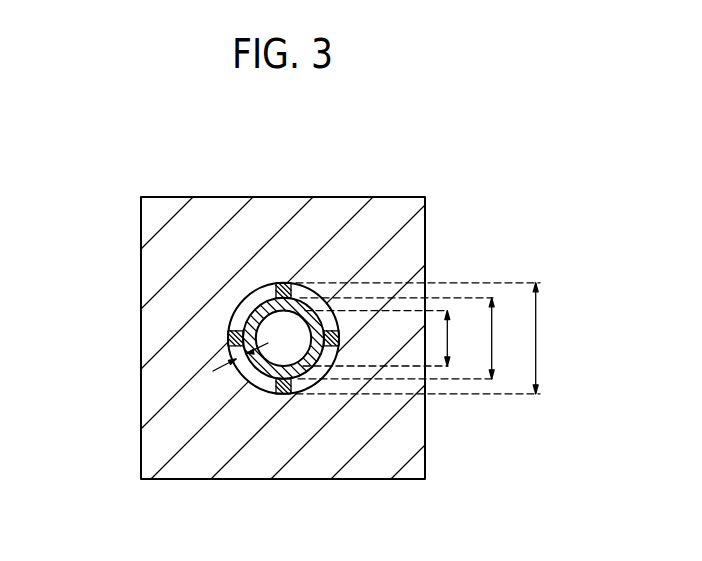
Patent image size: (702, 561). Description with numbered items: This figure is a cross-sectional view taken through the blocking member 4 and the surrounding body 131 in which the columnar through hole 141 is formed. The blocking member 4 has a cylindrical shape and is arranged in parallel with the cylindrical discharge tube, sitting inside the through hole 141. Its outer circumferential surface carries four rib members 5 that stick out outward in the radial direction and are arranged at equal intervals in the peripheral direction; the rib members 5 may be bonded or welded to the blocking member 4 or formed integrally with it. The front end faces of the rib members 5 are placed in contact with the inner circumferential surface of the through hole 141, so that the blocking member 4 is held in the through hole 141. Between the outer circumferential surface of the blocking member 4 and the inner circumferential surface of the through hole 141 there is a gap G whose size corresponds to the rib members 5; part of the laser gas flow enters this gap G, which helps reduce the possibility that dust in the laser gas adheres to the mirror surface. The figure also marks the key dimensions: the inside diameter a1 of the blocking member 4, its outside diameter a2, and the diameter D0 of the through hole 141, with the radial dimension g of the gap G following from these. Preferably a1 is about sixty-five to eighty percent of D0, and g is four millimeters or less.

The block body 131 is at (368, 470).
The through hole 141 is at (257, 292).
The blocking member 4 is at (277, 283).
The rib member 5 is at (331, 331).
The gap G is at (239, 318).
The dimension of the gap in the radial direction g is at (237, 367).
The inside diameter of the blocking member a1 is at (390, 338).
The outside diameter of the blocking member a2 is at (409, 338).
The diameter of the through hole D0 is at (431, 338).